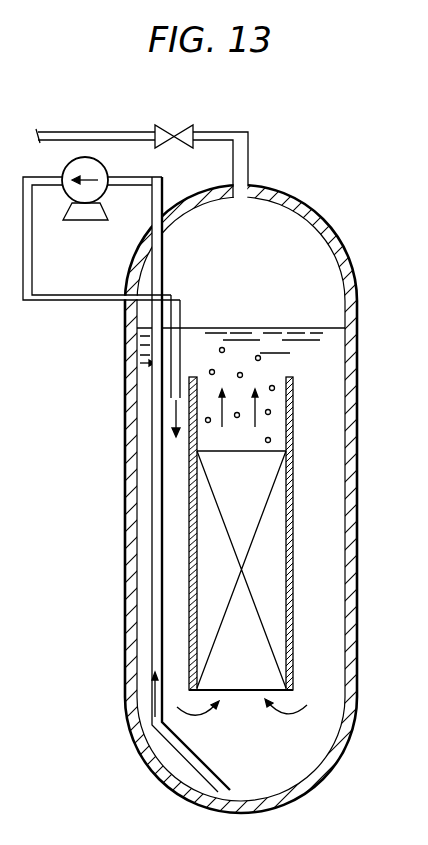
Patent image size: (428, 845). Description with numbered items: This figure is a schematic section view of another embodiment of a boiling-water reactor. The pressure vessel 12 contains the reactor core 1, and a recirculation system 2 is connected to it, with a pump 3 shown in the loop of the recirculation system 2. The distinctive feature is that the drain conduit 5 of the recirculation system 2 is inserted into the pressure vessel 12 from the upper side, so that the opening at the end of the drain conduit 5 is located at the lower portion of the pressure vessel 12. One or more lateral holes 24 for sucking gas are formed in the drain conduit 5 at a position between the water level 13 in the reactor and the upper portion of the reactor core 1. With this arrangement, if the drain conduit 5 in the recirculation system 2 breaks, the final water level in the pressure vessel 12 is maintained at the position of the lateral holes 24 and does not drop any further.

The reactor core 1 is at (273, 563).
The recirculation system 2 is at (32, 270).
The circulation pump 3 is at (103, 168).
The drain conduit 5 is at (152, 412).
The pressure vessel 12 is at (303, 203).
The water level 13 is at (312, 327).
The lateral holes 24 is at (155, 367).